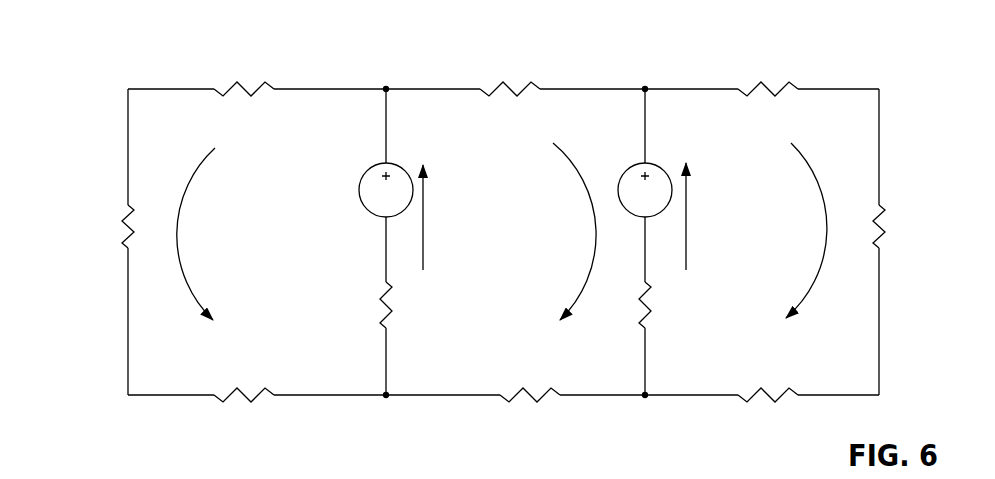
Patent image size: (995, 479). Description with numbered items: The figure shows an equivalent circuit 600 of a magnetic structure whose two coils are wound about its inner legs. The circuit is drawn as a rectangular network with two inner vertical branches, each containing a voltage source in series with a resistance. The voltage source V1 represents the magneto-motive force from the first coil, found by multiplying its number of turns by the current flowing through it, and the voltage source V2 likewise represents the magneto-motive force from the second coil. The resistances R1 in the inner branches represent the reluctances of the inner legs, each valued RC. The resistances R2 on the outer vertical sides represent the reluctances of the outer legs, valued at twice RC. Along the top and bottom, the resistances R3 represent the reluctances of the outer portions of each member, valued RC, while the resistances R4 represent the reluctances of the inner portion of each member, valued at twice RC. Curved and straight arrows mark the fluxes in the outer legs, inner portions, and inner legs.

The equivalent circuit 600 is at (140, 52).
The resistances R1 is at (517, 305).
The resistances R2 is at (506, 210).
The resistances R3 is at (506, 249).
The resistances R4 is at (517, 249).
The voltage source V1 is at (368, 173).
The voltage source V2 is at (634, 173).